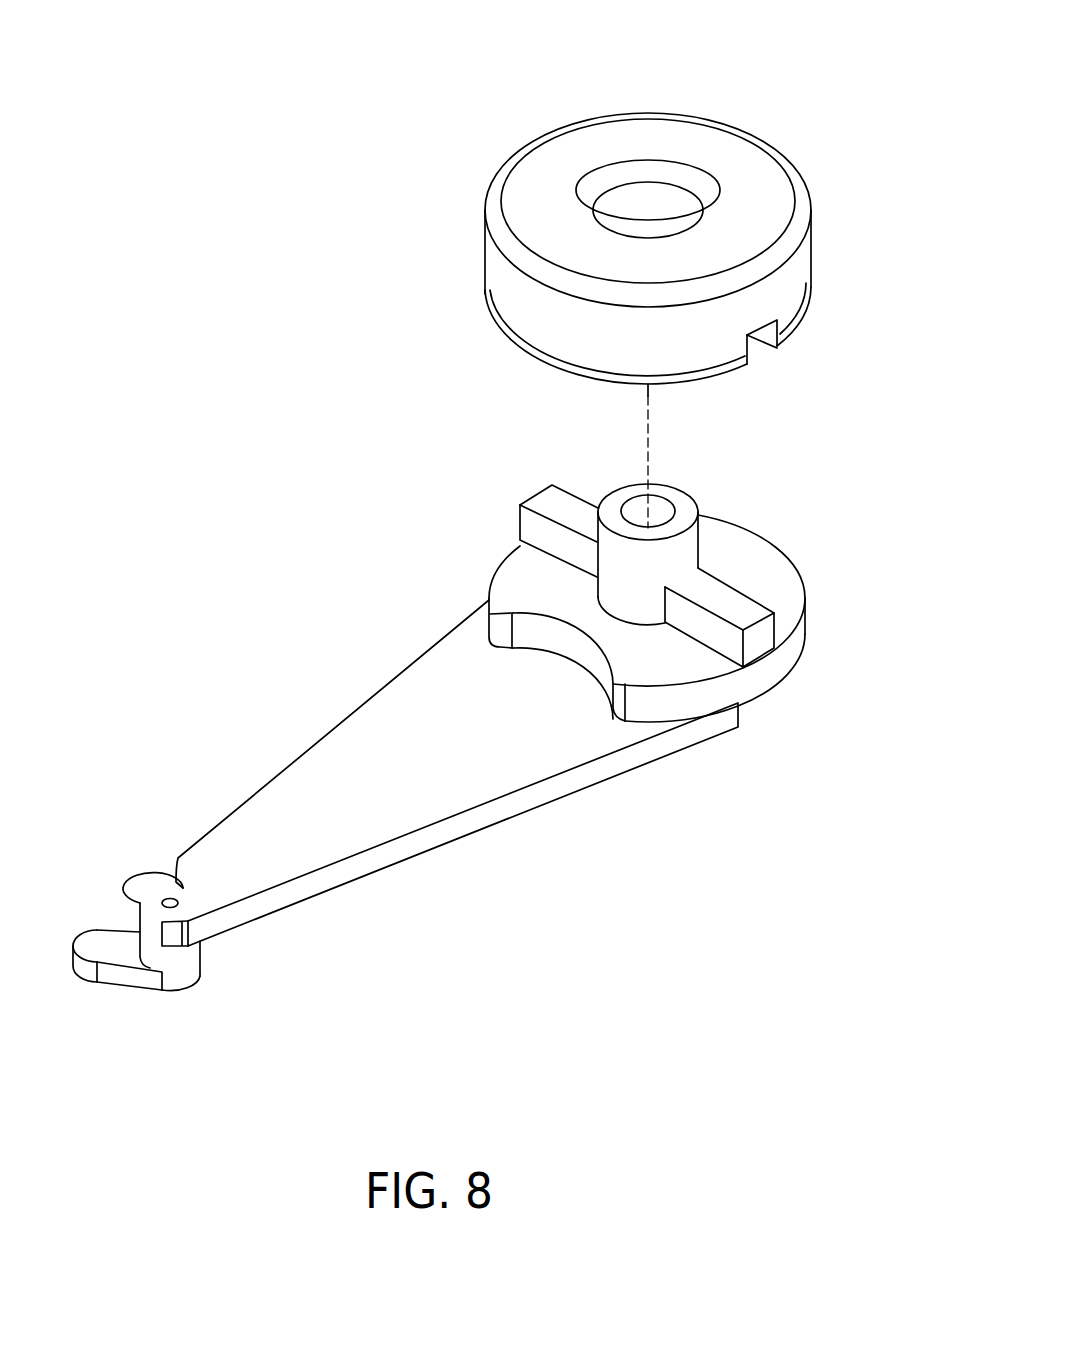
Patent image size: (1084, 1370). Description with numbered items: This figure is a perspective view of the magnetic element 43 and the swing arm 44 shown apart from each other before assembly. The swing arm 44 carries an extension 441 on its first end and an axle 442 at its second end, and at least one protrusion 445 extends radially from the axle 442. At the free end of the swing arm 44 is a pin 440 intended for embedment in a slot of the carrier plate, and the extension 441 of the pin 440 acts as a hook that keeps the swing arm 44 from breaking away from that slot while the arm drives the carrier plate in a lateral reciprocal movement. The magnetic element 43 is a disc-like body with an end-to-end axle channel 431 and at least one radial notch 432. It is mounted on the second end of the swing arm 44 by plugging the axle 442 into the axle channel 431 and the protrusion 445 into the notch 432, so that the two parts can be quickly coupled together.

The magnetic element 43 is at (785, 285).
The axle channel 431 is at (645, 210).
The radial notch 432 is at (753, 350).
The swing arm 44 is at (548, 788).
The pin 440 is at (177, 961).
The extension 441 is at (118, 975).
The axle 442 is at (683, 510).
The protrusion 445 is at (735, 608).